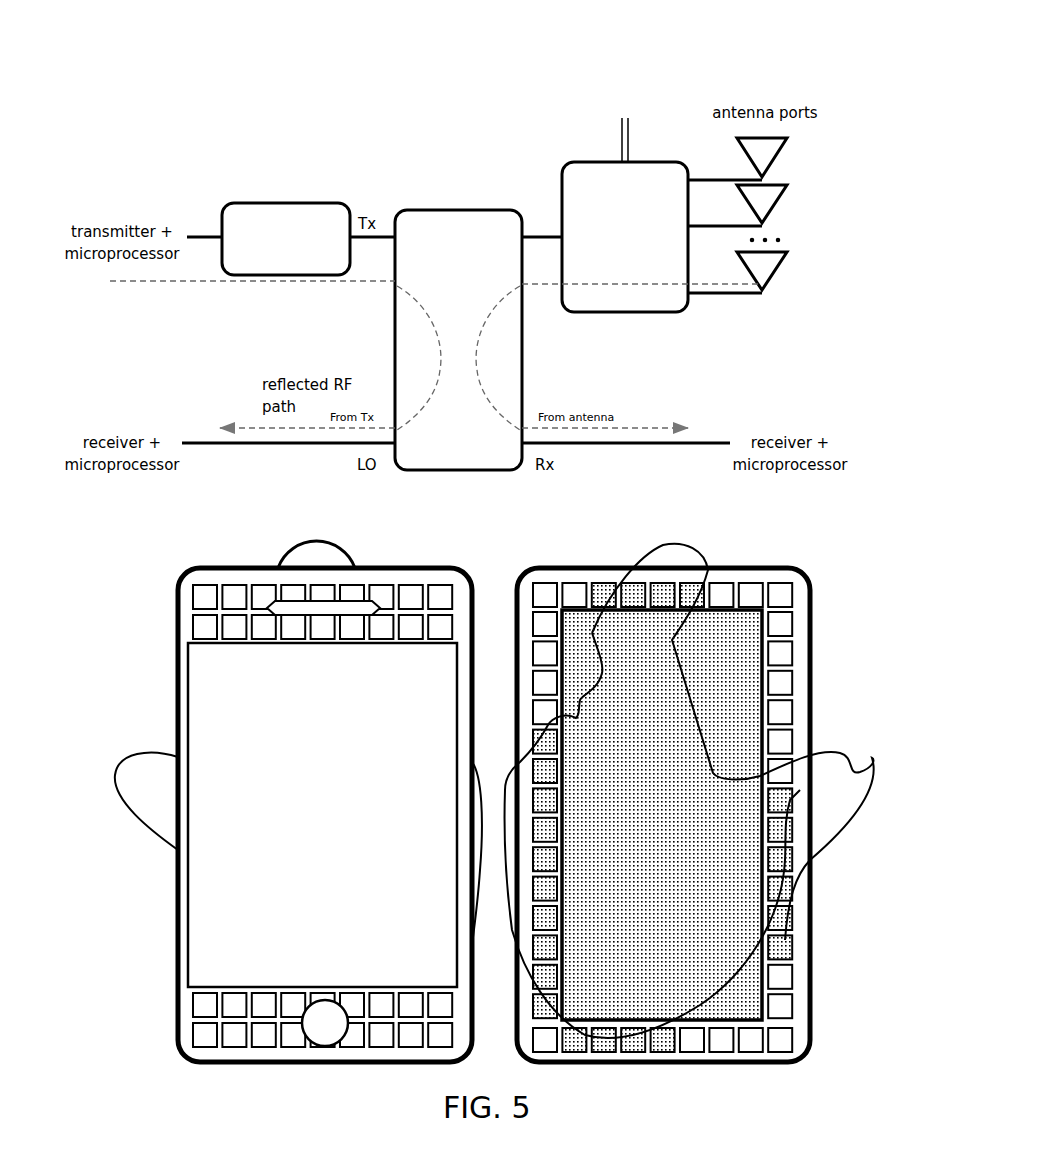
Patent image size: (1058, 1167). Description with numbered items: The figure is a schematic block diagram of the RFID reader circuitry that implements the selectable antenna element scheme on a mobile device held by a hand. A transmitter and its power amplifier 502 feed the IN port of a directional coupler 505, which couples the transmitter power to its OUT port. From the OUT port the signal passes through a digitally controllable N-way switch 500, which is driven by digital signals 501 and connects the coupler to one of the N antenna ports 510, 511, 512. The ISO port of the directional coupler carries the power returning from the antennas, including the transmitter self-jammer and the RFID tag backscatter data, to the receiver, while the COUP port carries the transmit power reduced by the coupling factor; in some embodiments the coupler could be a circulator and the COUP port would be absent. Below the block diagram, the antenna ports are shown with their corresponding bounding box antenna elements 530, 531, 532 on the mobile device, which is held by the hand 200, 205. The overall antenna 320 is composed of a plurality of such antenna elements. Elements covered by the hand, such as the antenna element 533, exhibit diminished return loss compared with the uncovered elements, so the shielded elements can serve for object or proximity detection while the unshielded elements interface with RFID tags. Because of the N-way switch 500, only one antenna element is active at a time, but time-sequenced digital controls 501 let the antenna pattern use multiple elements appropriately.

The digital signals 501 is at (627, 86).
The directional coupler 505 is at (420, 202).
The power amplifier 502 is at (286, 239).
The N-way switch 500 is at (625, 237).
The antenna port 510 is at (789, 150).
The antenna port 511 is at (785, 203).
The antenna port 512 is at (767, 293).
The antenna element 530 is at (196, 587).
The antenna element 531 is at (242, 585).
The hand 200 is at (354, 559).
The hand 205 is at (676, 541).
The antenna 320 is at (740, 690).
The antenna element 533 is at (782, 797).
The antenna element 532 is at (795, 1026).